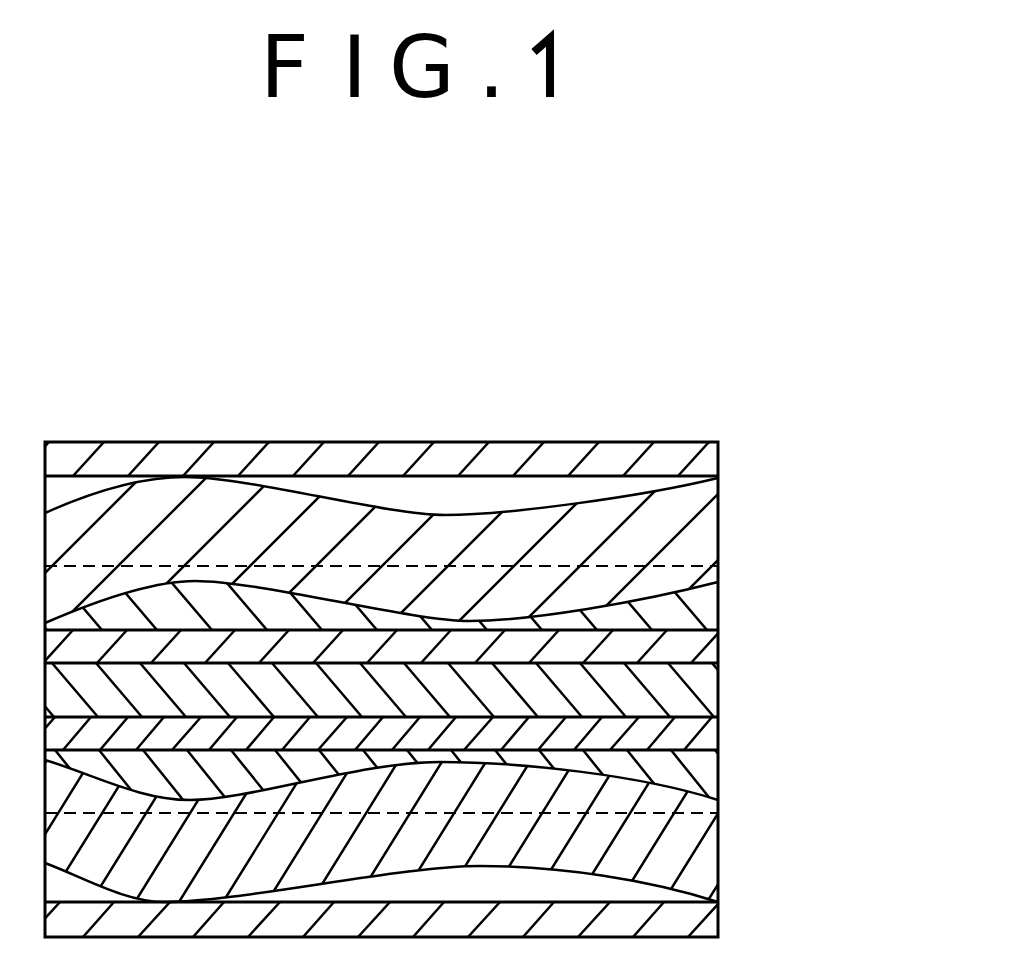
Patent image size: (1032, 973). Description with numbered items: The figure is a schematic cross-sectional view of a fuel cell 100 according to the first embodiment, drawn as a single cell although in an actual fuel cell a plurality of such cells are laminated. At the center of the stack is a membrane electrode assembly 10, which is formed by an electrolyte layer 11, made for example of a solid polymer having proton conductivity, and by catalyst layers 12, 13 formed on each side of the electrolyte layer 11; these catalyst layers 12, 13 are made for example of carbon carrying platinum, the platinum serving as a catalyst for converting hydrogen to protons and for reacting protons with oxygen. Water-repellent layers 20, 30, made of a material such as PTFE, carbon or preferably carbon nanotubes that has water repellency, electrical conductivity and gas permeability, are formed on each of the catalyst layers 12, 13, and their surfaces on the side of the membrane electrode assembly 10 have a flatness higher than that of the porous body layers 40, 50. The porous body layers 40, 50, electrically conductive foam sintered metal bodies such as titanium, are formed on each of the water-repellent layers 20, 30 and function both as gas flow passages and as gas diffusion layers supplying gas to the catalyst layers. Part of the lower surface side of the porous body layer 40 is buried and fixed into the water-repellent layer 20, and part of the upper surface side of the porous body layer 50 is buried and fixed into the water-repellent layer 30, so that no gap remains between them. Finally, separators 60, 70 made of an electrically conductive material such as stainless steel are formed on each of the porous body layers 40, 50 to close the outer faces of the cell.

The fuel cell 100 is at (620, 393).
The membrane electrode assembly 10 is at (456, 677).
The electrolyte layer 11 is at (720, 690).
The catalyst layer 12 is at (720, 653).
The catalyst layer 13 is at (429, 720).
The water-repellent layer 20 is at (720, 567).
The water-repellent layer 30 is at (720, 752).
The porous body layer 40 is at (712, 515).
The porous body layer 50 is at (712, 863).
The separator 60 is at (712, 461).
The separator 70 is at (712, 920).